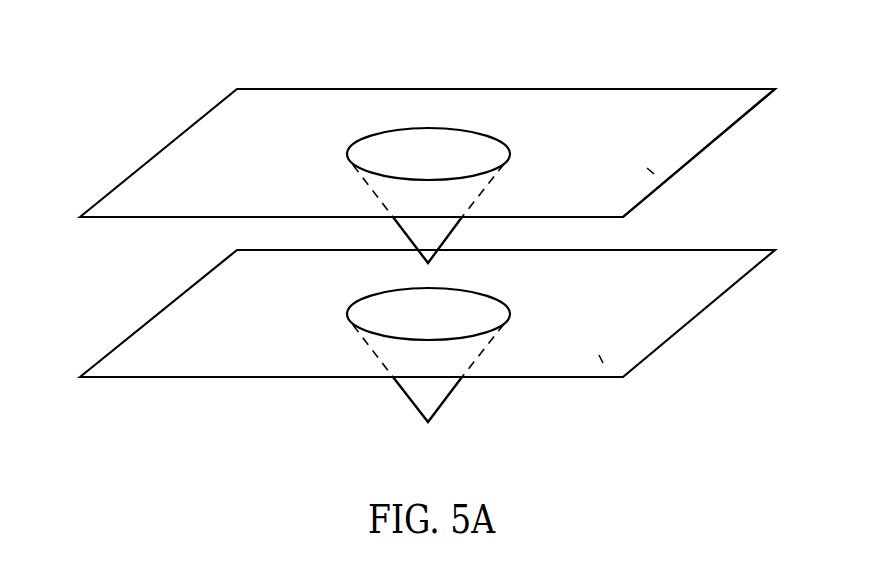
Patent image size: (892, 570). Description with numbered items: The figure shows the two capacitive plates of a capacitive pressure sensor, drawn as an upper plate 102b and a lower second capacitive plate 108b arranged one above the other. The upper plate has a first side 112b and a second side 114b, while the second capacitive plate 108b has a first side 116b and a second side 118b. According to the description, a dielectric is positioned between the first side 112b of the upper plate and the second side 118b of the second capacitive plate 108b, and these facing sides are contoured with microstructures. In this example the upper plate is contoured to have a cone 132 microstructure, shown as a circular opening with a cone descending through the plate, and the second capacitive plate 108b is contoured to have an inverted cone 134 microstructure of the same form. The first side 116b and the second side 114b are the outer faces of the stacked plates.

The first substrate 102b is at (738, 120).
The second side 114b is at (687, 105).
The first side 112b is at (655, 177).
The cone 132 is at (410, 237).
The second capacitive plate 108b is at (668, 310).
The second side 118b is at (692, 263).
The first side 116b is at (605, 370).
The inverted cone 134 is at (400, 392).